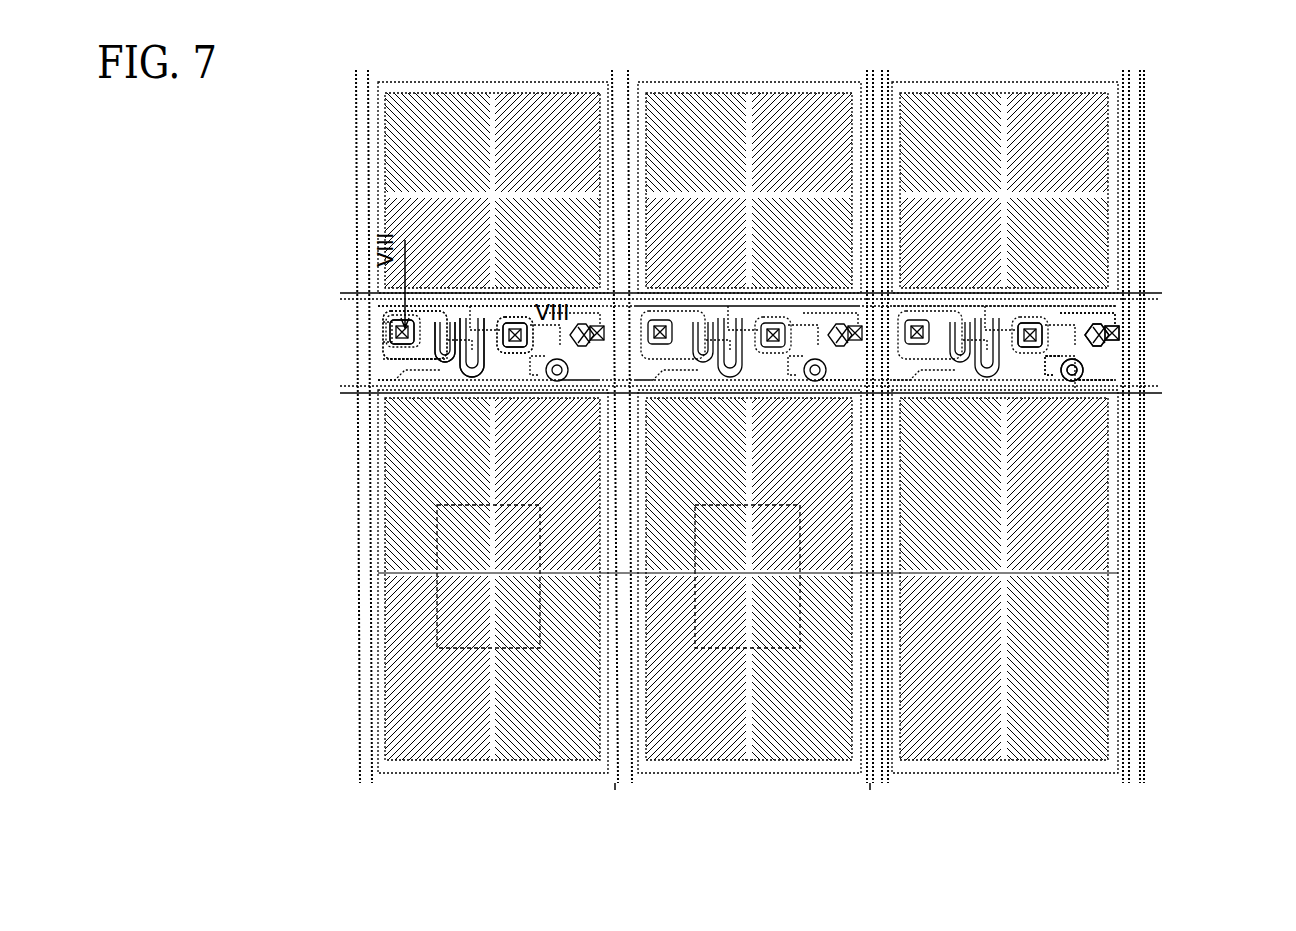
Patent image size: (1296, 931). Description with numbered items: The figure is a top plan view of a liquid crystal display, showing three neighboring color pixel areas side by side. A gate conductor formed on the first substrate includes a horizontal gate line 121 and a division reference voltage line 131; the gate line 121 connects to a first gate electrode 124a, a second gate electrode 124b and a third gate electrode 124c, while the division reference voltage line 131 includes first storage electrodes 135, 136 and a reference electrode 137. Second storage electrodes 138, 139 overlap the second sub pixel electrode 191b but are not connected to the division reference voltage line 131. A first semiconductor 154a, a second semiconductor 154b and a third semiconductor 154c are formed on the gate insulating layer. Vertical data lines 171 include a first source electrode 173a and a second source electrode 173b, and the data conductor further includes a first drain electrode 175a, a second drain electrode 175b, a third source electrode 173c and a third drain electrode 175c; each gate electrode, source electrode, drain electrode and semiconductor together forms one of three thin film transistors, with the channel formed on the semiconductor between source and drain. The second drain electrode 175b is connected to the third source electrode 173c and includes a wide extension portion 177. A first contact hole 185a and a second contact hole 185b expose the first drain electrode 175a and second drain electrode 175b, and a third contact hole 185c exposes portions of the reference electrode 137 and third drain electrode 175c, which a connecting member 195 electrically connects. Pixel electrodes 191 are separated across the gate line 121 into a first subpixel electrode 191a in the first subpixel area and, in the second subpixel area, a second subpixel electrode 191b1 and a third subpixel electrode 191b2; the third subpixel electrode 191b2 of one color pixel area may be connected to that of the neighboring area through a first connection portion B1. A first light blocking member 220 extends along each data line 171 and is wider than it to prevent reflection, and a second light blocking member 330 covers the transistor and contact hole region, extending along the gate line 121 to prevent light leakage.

The gate line 121 is at (370, 380).
The first gate electrode 124a is at (385, 312).
The second gate electrode 124b is at (475, 305).
The third gate electrode 124c is at (1125, 384).
The division reference voltage line 131 is at (1150, 300).
The first storage electrode 135 is at (1126, 200).
The first storage electrode 136 is at (424, 82).
The reference electrode 137 is at (1125, 318).
The second storage electrode 138 is at (1131, 640).
The second storage electrode 139 is at (520, 776).
The first semiconductor 154a is at (395, 318).
The second semiconductor 154b is at (460, 318).
The third semiconductor 154c is at (1065, 368).
The data line 171 is at (356, 100).
The first source electrode 173a is at (390, 352).
The second source electrode 173b is at (468, 372).
The third source electrode 173c is at (1118, 362).
The first drain electrode 175a is at (385, 326).
The second drain electrode 175b is at (442, 362).
The third drain electrode 175c is at (1078, 378).
The wide extension portion 177 is at (1062, 345).
The first contact hole 185a is at (398, 332).
The second contact hole 185b is at (1035, 328).
The third contact hole 185c is at (1119, 333).
The pixel electrode 191 is at (1215, 708).
The first subpixel electrode 191a is at (385, 160).
The second sub pixel electrode 191b is at (929, 579).
The second subpixel electrode 191b1 is at (440, 545).
The third subpixel electrode 191b2 is at (385, 516).
The connecting member 195 is at (1110, 345).
The first light blocking member 220 is at (1144, 157).
The second light blocking member 330 is at (1150, 293).
The first connection portion B1 is at (617, 790).